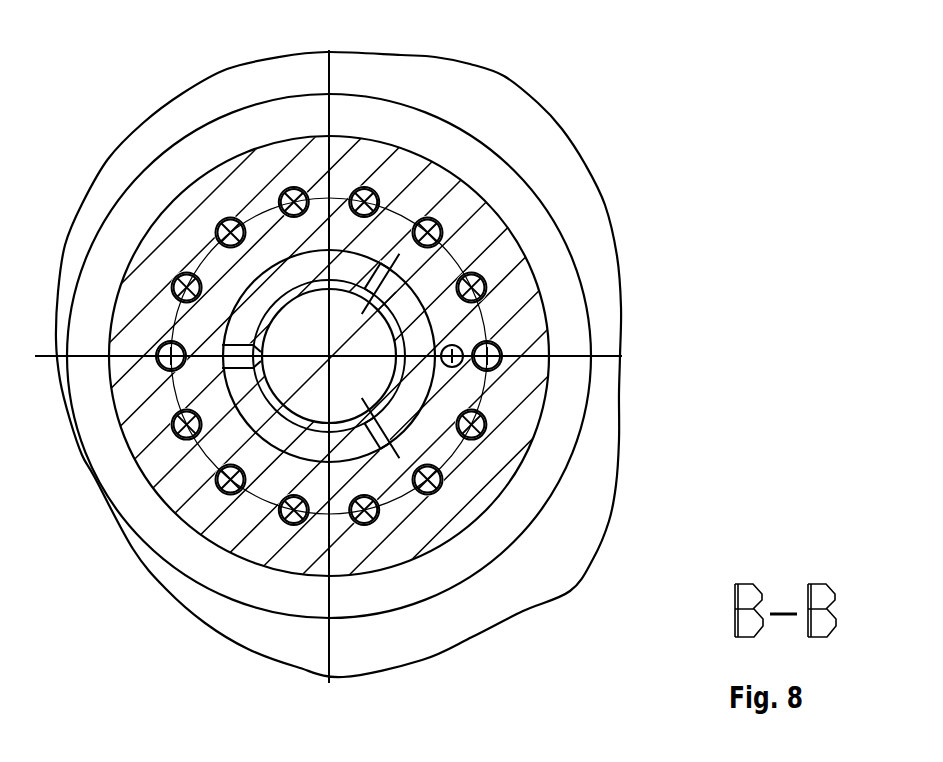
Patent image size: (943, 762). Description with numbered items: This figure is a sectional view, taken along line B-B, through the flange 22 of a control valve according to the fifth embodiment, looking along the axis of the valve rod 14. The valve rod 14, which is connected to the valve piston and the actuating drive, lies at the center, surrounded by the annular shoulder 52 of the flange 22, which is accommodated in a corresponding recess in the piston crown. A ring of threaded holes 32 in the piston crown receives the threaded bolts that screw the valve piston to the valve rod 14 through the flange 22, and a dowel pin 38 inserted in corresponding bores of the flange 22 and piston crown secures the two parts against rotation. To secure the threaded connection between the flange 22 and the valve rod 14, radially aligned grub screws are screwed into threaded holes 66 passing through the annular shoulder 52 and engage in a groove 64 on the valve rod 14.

The valve rod 14 is at (307, 318).
The flange 22 is at (513, 315).
The threaded hole 32 is at (175, 279).
The dowel pin 38 is at (461, 363).
The annular shoulder 52 is at (400, 413).
The groove 64 is at (290, 427).
The threaded holes 66 is at (241, 344).